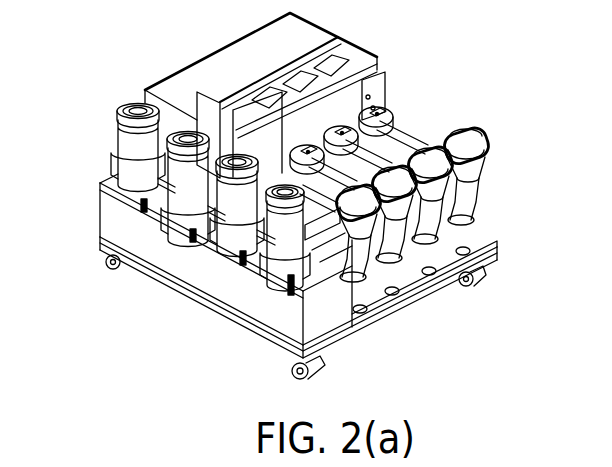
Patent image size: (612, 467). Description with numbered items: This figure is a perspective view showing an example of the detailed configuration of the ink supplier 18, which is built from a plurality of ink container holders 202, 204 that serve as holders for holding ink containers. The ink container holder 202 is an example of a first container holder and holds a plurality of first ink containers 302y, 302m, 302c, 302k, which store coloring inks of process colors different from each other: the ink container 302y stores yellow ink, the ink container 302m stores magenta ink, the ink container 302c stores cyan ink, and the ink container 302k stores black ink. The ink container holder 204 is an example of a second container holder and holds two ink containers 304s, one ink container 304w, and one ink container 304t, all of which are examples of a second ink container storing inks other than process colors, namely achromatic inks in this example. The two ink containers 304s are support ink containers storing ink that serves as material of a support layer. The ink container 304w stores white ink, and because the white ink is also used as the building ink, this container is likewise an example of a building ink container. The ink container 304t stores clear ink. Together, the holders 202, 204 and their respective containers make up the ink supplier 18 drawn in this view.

The ink supplier 18 is at (559, 29).
The ink container holder 202 is at (283, 320).
The ink container holder 204 is at (380, 96).
The ink container 302y is at (117, 145).
The ink container 302m is at (160, 238).
The ink container 302c is at (207, 248).
The ink container 302k is at (270, 258).
The ink container 304t is at (466, 212).
The ink container 304s is at (385, 265).
The ink container 304w is at (430, 252).